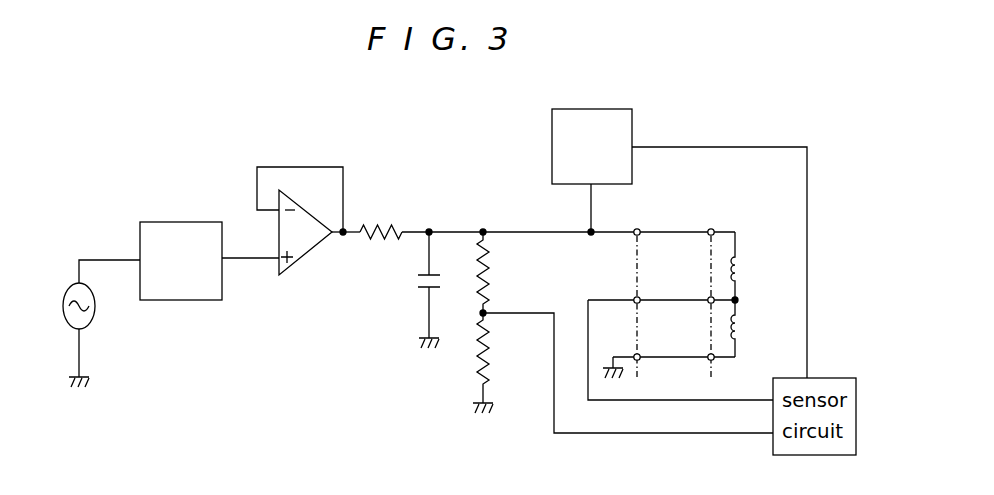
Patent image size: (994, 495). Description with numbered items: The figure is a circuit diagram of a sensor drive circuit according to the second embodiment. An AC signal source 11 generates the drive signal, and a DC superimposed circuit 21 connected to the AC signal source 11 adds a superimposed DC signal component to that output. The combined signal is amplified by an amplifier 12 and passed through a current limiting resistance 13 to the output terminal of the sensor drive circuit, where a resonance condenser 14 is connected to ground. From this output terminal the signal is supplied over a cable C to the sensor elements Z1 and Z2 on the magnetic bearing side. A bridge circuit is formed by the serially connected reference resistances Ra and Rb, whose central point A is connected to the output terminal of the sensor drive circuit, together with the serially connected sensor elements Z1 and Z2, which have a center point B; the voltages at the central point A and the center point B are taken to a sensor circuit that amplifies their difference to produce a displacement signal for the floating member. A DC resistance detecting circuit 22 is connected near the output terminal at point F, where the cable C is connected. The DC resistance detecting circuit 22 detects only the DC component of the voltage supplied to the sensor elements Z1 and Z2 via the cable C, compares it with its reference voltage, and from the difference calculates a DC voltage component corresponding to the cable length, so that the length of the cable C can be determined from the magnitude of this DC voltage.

The AC signal source 11 is at (95, 308).
The DC superimposed circuit 21 is at (178, 300).
The amplifier 12 is at (302, 258).
The current limiting resistance 13 is at (377, 222).
The resonance condenser 14 is at (418, 290).
The DC resistance detecting circuit 22 is at (634, 108).
The reference resistance Ra is at (499, 271).
The reference resistance Rb is at (497, 363).
The central point A is at (483, 313).
The center point B is at (738, 300).
The node F is at (587, 236).
The cable C is at (662, 228).
The sensor element Z1 is at (752, 266).
The sensor element Z2 is at (752, 328).